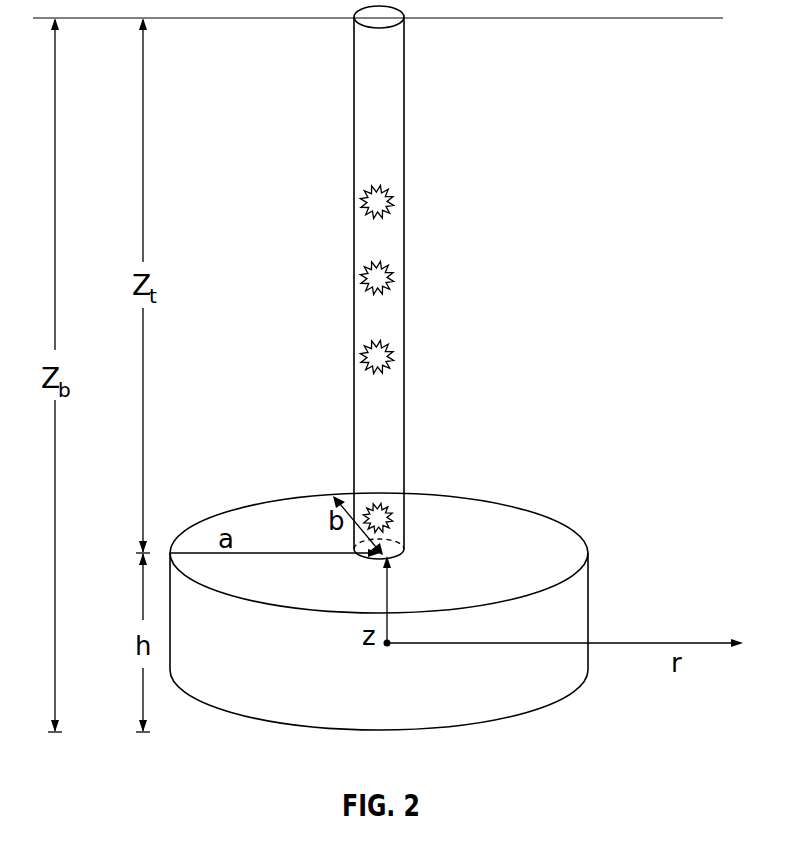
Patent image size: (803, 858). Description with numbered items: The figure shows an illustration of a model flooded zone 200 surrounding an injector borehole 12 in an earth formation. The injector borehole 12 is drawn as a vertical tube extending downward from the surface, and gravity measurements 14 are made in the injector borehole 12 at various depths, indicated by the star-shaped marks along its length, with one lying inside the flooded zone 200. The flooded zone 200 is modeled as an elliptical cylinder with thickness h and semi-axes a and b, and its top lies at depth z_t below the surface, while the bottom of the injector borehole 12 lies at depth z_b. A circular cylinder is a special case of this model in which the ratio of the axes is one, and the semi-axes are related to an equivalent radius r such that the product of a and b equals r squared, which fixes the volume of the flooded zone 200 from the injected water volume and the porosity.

The injector borehole 12 is at (354, 157).
The gravity measurements 14 is at (392, 199).
The model flooded zone 200 is at (588, 586).